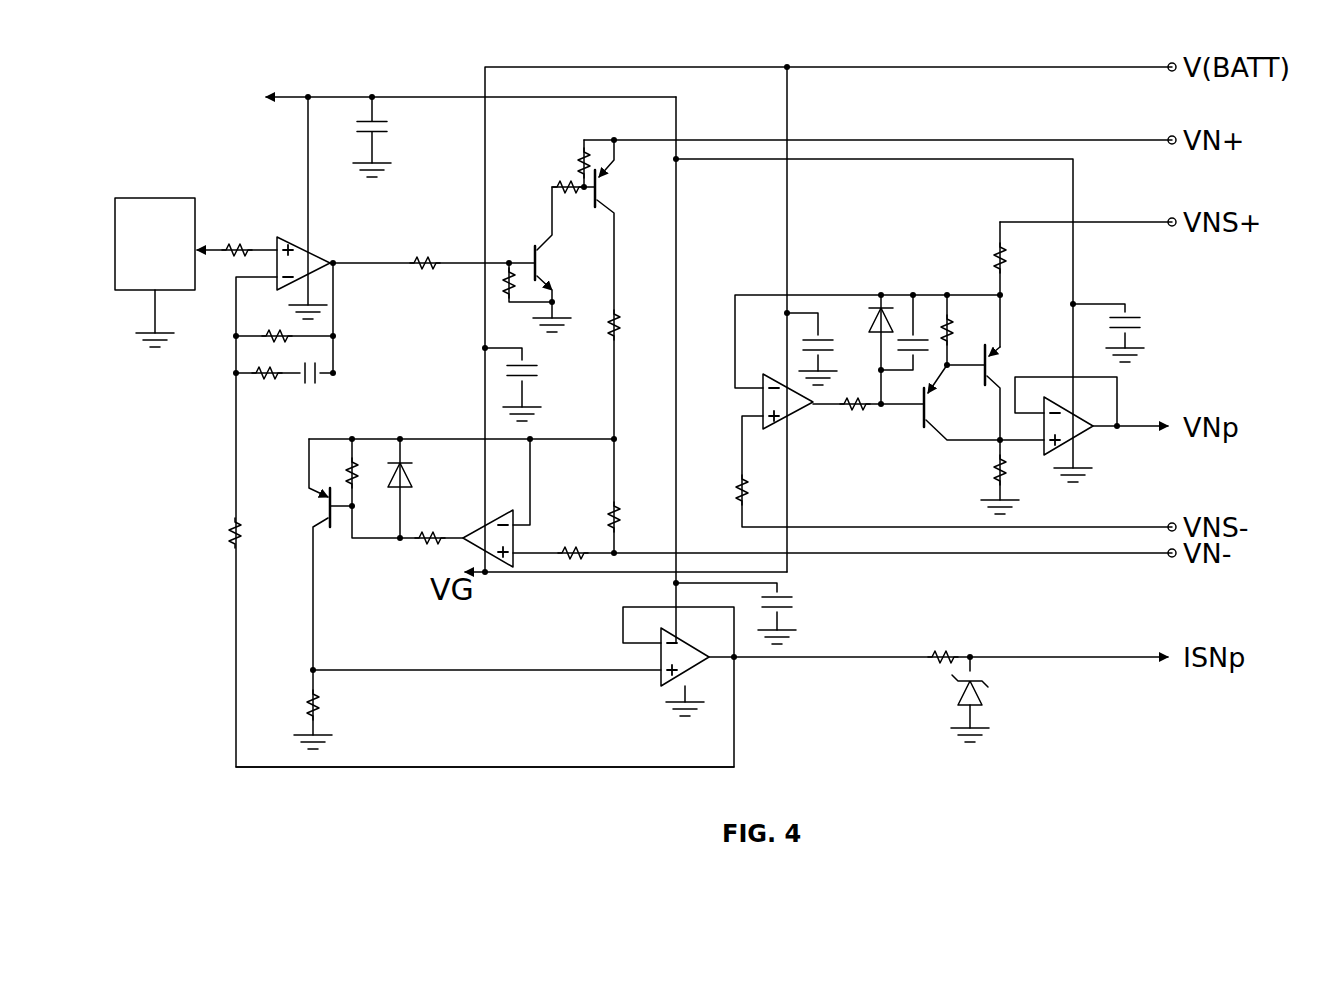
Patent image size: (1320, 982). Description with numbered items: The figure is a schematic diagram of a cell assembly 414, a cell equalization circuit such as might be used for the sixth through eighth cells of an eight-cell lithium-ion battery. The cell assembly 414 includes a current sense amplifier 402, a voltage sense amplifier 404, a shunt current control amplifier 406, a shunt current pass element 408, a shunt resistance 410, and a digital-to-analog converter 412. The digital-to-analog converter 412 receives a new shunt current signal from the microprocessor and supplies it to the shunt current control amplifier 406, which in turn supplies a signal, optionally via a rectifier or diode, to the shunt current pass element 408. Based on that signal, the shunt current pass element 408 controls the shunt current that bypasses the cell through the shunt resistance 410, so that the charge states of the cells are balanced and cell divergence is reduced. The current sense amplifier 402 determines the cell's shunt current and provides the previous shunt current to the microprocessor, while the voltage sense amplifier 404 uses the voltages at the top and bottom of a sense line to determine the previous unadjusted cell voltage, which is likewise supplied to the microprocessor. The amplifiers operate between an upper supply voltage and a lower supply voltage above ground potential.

The current sense amplifier 402 is at (480, 778).
The voltage sense amplifier 404 is at (1051, 488).
The shunt current control amplifier 406 is at (331, 238).
The shunt current pass element 408 is at (585, 209).
The shunt resistance 410 is at (608, 330).
The digital-to-analog converter 412 is at (157, 197).
The cell assembly 414 is at (206, 70).